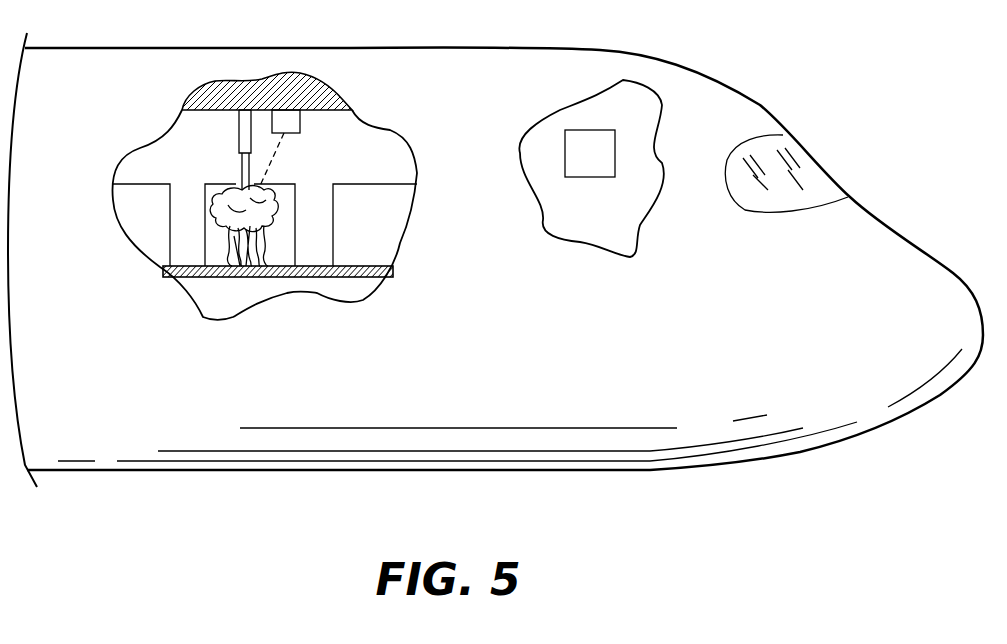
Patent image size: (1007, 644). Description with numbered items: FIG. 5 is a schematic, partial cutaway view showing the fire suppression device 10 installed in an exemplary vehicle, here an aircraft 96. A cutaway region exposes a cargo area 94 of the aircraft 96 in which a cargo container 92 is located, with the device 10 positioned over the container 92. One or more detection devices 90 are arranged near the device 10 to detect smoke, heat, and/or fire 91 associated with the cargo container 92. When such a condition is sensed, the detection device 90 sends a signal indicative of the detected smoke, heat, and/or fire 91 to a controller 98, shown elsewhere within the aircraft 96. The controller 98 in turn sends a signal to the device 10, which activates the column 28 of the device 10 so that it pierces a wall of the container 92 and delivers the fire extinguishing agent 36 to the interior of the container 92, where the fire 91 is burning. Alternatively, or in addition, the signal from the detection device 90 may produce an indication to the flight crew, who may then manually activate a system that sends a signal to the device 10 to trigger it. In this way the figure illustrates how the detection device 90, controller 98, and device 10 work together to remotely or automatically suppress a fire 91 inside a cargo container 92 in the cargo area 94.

The device 10 is at (248, 123).
The column 28 is at (240, 170).
The fire extinguishing agent 36 is at (273, 208).
The detection device 90 is at (283, 127).
The fire 91 is at (263, 247).
The cargo container 92 is at (138, 193).
The cargo area 94 is at (318, 137).
The aircraft 96 is at (485, 312).
The controller 98 is at (578, 167).